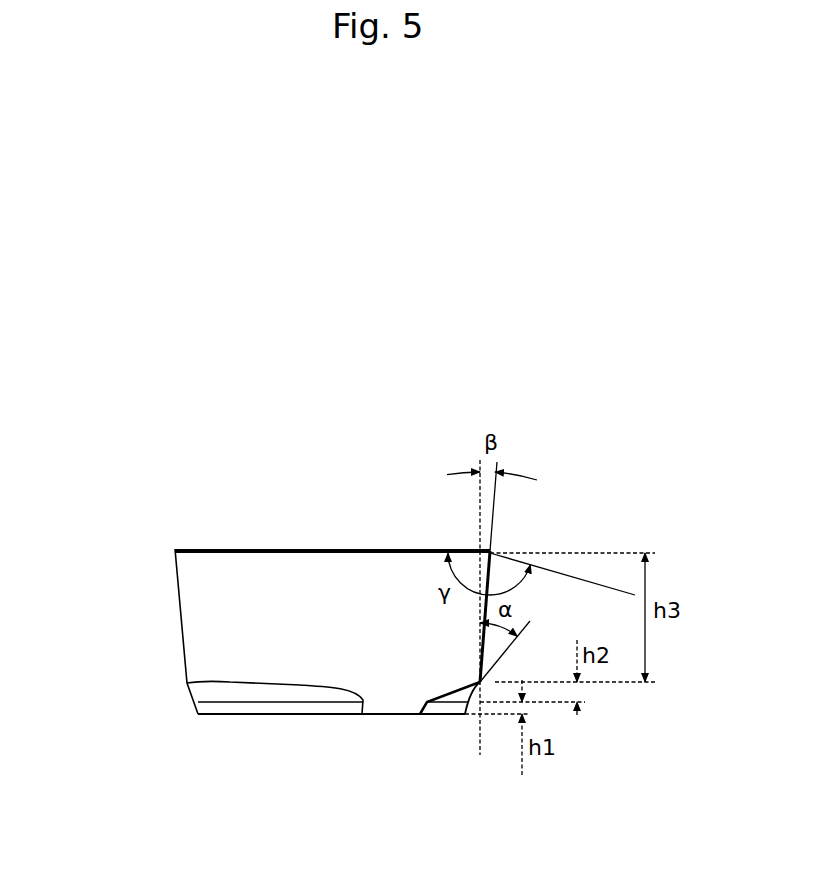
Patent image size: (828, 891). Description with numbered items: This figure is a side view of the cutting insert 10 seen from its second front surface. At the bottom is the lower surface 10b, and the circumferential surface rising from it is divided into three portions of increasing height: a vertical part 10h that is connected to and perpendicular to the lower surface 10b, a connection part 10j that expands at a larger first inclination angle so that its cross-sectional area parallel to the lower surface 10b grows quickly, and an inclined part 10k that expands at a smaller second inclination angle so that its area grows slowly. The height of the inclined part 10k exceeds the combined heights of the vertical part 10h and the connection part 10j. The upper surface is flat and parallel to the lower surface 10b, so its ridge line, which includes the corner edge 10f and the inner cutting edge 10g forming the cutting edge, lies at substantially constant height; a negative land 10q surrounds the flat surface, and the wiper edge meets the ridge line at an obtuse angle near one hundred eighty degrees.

The cutting insert 10 is at (530, 539).
The inner cutting edge 10g is at (258, 549).
The corner edge 10f is at (383, 549).
The negative land 10q is at (443, 549).
The inclined part 10k is at (258, 625).
The connection part 10j is at (203, 695).
The vertical part 10h is at (232, 708).
The lower surface 10b is at (445, 716).